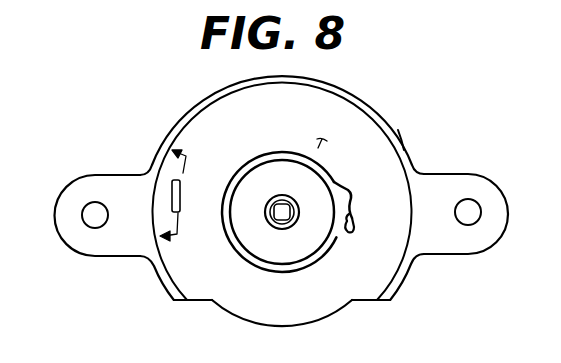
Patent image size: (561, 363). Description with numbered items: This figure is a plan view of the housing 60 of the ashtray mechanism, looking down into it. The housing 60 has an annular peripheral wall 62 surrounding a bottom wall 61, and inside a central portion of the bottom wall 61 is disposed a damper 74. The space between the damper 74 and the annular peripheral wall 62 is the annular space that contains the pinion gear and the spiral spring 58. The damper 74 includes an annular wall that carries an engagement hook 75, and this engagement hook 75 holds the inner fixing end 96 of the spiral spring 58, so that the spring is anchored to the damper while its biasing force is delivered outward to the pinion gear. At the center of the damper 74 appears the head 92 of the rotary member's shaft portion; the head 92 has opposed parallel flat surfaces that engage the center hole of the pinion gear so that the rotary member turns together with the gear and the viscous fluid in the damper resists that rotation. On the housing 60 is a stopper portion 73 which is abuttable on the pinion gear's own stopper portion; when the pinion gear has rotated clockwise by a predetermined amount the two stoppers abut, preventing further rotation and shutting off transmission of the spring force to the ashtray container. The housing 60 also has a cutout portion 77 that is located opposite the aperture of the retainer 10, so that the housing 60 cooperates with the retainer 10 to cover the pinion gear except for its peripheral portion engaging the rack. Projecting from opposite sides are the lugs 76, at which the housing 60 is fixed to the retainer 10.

The retainer 10 is at (192, 205).
The spiral spring 58 is at (357, 189).
The housing 60 is at (167, 133).
The bottom wall 61 is at (330, 115).
The annular peripheral wall 62 is at (400, 146).
The stopper portion 73 is at (180, 198).
The damper 74 is at (314, 184).
The engagement hook 75 is at (354, 224).
The lugs 76 is at (83, 174).
The cutout portion 77 is at (367, 300).
The head 92 is at (283, 222).
The inner fixing end 96 is at (352, 234).